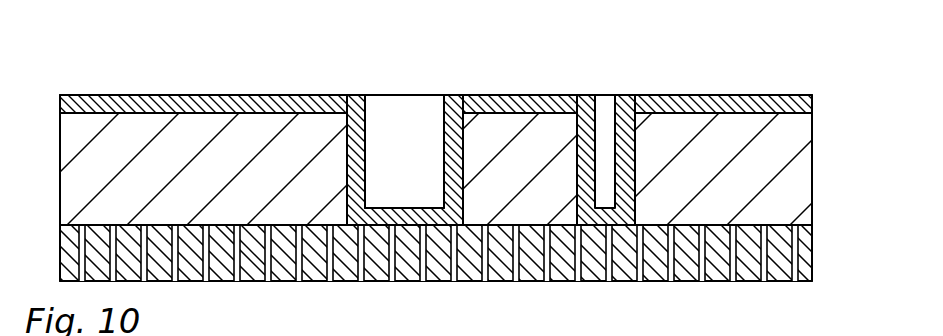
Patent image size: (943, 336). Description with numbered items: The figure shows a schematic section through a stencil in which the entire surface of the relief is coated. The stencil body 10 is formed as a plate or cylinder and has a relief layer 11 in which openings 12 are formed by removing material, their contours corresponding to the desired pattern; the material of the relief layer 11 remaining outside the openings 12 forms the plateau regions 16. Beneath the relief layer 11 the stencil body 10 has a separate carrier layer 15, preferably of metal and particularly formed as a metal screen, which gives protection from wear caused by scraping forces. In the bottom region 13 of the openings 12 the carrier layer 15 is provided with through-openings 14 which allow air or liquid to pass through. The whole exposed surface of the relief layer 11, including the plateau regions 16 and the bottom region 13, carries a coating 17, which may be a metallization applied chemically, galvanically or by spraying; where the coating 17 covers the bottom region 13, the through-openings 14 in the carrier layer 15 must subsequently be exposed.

The stencil body 10 is at (728, 62).
The relief layer 11 is at (745, 128).
The openings 12 is at (410, 127).
The bottom region 13 is at (372, 225).
The through-openings 14 is at (423, 257).
The carrier layer 15 is at (775, 268).
The plateau regions 16 is at (516, 111).
The coating 17 is at (240, 97).